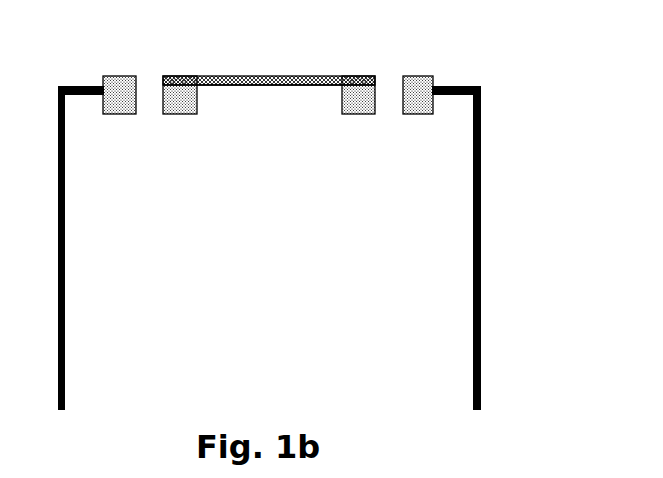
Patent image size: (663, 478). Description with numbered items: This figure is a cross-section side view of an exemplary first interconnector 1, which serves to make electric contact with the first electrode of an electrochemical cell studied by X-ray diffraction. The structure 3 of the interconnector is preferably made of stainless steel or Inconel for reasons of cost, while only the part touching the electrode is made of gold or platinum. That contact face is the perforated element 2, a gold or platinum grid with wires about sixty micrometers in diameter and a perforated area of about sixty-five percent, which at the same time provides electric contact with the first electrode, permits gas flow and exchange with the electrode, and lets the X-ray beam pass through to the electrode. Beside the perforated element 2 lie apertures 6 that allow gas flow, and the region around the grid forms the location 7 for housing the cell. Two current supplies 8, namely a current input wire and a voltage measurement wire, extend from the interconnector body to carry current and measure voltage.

The first interconnector 1 is at (493, 66).
The perforated element 2 is at (270, 78).
The structure 3 is at (421, 85).
The apertures 6 is at (152, 100).
The location for housing the cell 7 is at (236, 107).
The current supplies 8 is at (58, 271).